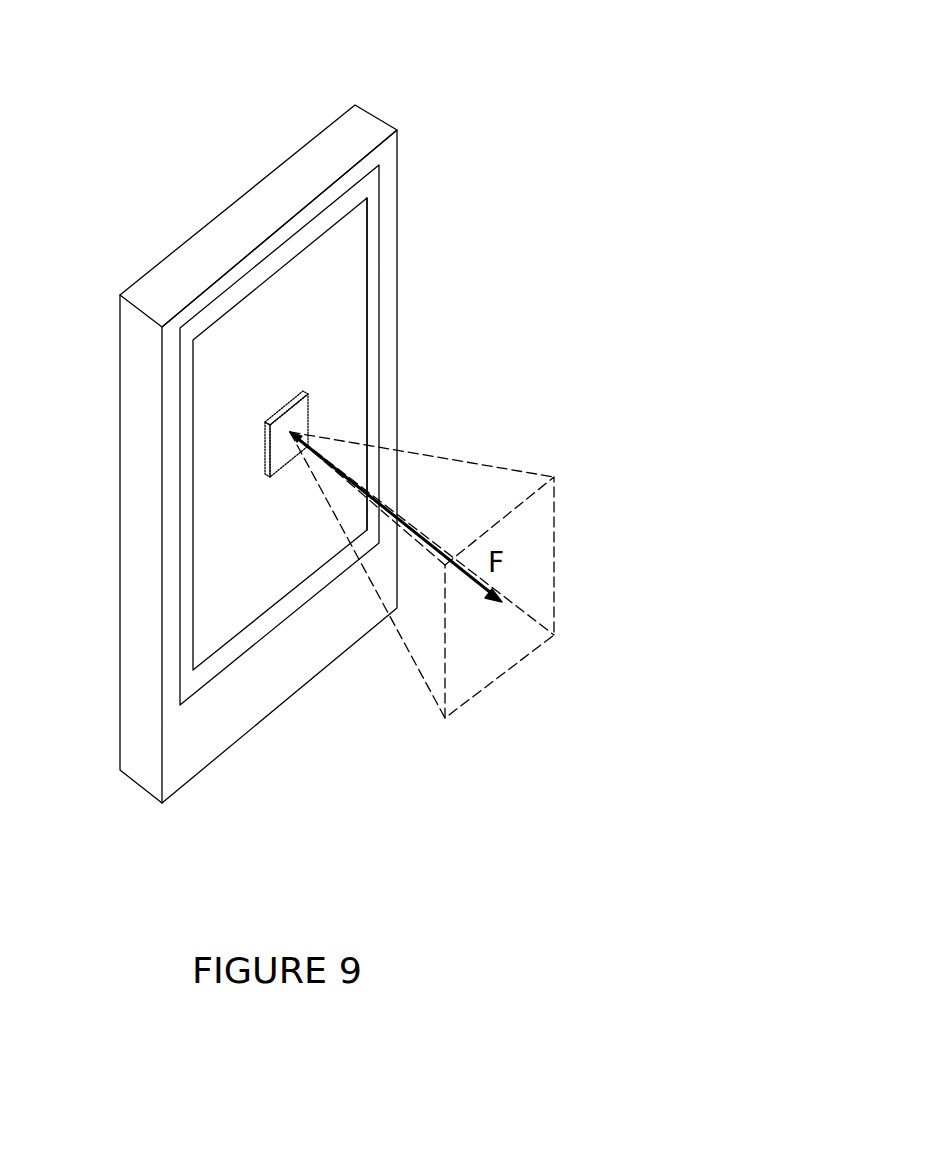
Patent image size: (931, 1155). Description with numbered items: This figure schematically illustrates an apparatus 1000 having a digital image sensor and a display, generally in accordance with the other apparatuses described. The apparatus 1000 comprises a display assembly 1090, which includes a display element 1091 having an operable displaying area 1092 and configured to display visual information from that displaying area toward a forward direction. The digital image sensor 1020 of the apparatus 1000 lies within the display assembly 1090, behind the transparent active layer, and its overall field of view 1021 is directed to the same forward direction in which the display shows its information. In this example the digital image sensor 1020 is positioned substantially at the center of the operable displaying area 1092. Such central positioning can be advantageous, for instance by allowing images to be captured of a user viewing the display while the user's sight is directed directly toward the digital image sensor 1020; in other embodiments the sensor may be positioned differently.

The apparatus 1000 is at (420, 113).
The display assembly 1090 is at (382, 255).
The display element 1091 is at (373, 302).
The operable displaying area 1092 is at (367, 346).
The digital image sensor 1020 is at (263, 457).
The overall field of view 1021 is at (443, 458).